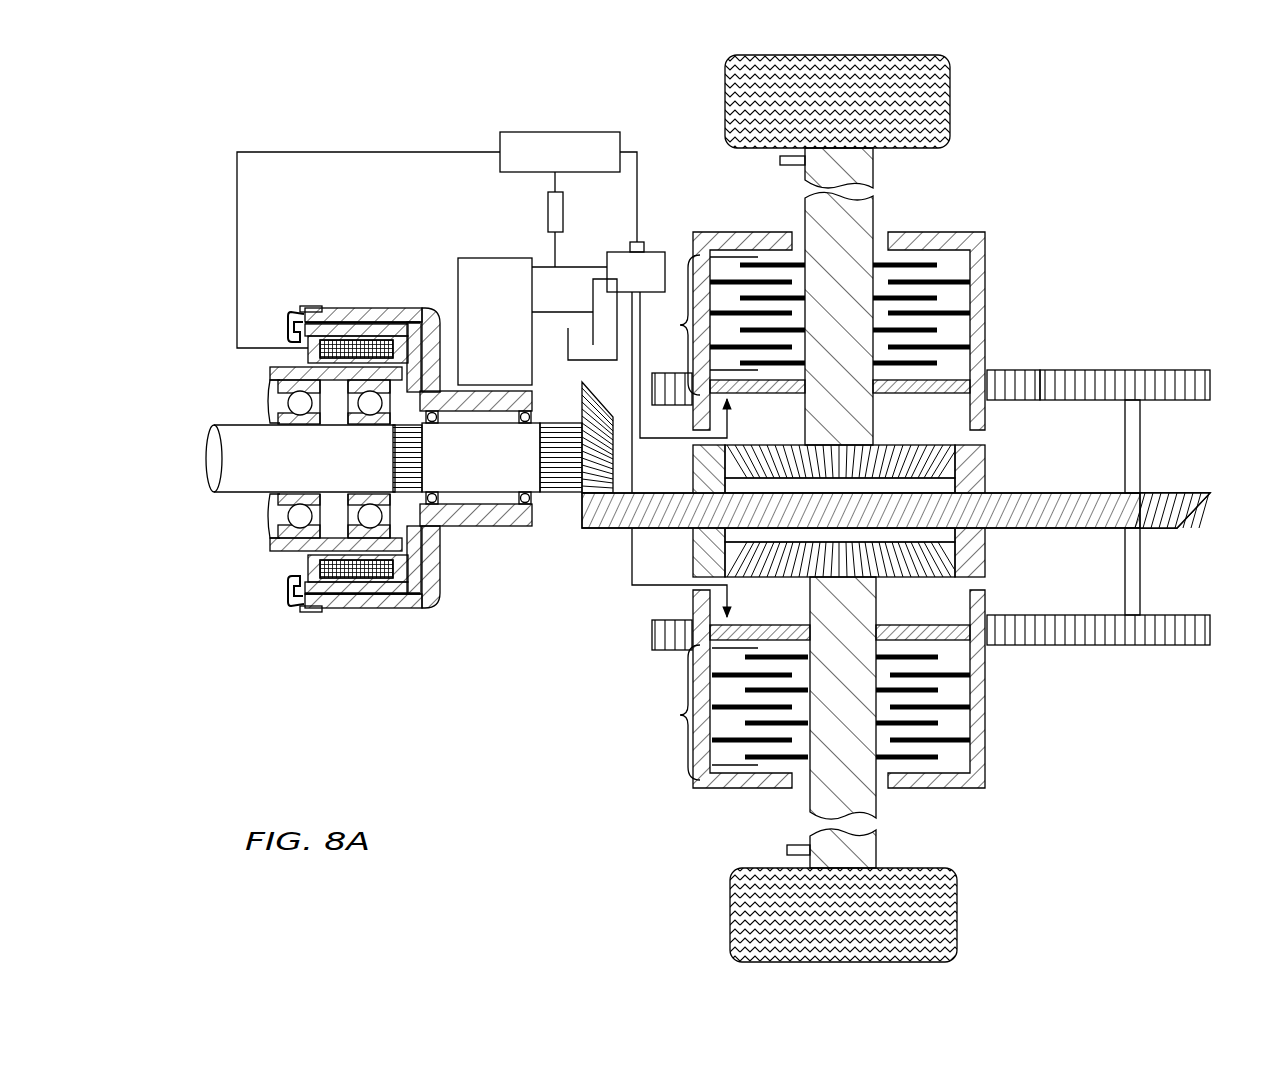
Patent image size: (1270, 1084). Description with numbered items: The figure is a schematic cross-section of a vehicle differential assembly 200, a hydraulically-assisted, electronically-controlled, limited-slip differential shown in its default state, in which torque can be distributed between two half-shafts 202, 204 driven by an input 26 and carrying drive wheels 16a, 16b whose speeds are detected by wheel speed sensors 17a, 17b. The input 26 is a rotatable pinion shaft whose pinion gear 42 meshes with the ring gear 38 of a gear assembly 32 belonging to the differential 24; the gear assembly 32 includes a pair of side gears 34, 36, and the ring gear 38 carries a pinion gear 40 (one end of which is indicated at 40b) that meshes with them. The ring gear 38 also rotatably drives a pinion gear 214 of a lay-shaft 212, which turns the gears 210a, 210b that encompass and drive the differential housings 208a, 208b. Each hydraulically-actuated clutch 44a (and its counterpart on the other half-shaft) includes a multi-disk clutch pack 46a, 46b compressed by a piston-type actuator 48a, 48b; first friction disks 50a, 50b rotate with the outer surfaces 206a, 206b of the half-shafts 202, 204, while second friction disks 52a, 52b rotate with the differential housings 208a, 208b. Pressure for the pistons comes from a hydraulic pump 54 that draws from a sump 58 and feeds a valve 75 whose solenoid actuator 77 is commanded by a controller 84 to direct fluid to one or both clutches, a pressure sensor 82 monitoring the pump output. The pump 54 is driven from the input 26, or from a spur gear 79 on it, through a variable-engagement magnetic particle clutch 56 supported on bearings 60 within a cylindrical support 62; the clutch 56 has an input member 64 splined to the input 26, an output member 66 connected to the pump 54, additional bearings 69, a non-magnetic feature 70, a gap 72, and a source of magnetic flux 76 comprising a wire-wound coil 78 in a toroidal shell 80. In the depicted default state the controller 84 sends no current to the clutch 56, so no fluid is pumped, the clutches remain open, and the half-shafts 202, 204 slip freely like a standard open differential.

The drive wheel 16a is at (950, 92).
The drive wheel 16b is at (957, 900).
The wheel speed sensor 17a is at (780, 160).
The wheel speed sensor 17b is at (787, 850).
The differential 24 is at (921, 508).
The input 26 is at (317, 470).
The gear assembly 32 is at (851, 510).
The side gear 34 is at (922, 445).
The side gear 36 is at (924, 578).
The ring gear 38 is at (1050, 523).
The pinion gear 40 is at (987, 545).
The rotor end portion 40b is at (703, 548).
The pinion gear 42 is at (590, 508).
The hydraulically-actuated clutch 44a is at (867, 331).
The multi-disk clutch pack 46a is at (716, 331).
The multi-disk clutch pack 46b is at (716, 689).
The clutch pack-compressing actuator 48a is at (987, 362).
The clutch pack-compressing actuator 48b is at (987, 650).
The first friction disk 50a is at (940, 330).
The first friction disk 50b is at (940, 720).
The second friction disk 52a is at (800, 312).
The second friction disk 52b is at (800, 742).
The hydraulic pump 54 is at (468, 258).
The variable-engagement clutch 56 is at (388, 424).
The sump 58 is at (580, 361).
The bearings 60 is at (272, 410).
The cylindrical support 62 is at (268, 372).
The input member 64 is at (387, 458).
The output member 66 is at (430, 310).
The bearings 69 is at (530, 497).
The non-magnetic feature 70 is at (352, 325).
The gap 72 is at (382, 310).
The valve 75 is at (666, 253).
The source of magnetic flux 76 is at (303, 357).
The actuator 77 is at (634, 243).
The wire-wound coil 78 is at (312, 308).
The spur gear 79 is at (532, 390).
The toroidal shell 80 is at (305, 345).
The pressure sensor 82 is at (548, 210).
The controller 84 is at (506, 131).
The vehicle differential assembly 200 is at (1163, 110).
The output 202 is at (870, 215).
The output 204 is at (822, 797).
The outer surface 206a is at (806, 421).
The outer surface 206b is at (806, 600).
The differential housing 208a is at (985, 270).
The differential housing 208b is at (985, 757).
The gear 210a is at (1015, 400).
The gear 210b is at (1015, 618).
The lay-shaft 212 is at (1180, 366).
The pinion gear 214 is at (1185, 492).